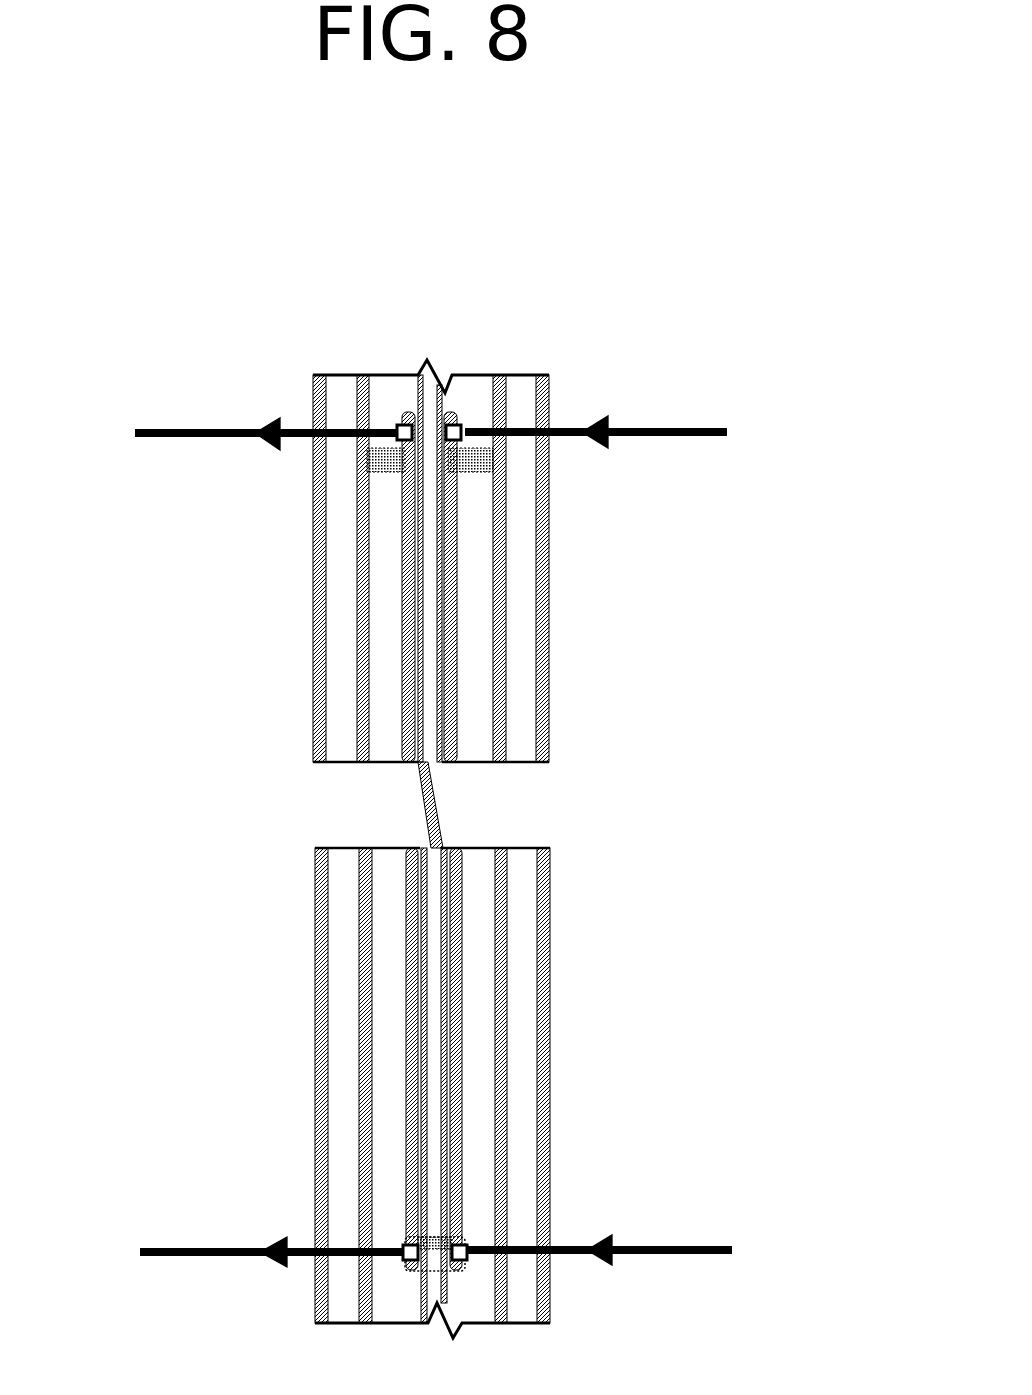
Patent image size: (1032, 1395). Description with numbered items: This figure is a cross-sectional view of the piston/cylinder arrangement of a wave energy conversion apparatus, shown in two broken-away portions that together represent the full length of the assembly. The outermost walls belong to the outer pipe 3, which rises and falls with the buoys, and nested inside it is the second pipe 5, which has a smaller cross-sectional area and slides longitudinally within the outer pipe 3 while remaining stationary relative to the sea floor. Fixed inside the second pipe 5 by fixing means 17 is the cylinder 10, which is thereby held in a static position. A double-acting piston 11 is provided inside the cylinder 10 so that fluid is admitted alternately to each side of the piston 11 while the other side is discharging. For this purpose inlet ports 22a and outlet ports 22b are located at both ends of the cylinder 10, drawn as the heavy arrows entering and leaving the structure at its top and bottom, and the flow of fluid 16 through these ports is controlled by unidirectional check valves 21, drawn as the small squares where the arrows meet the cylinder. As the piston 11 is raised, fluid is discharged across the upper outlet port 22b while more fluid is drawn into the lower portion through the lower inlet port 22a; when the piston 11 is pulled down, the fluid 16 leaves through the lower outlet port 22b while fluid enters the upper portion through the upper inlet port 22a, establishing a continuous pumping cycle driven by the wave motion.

The outer pipe 3 is at (548, 563).
The second pipe 5 is at (500, 638).
The cylinder 10 is at (405, 517).
The double-acting piston 11 is at (458, 685).
The fluid 16 is at (415, 676).
The fixing means 17 is at (362, 480).
The unidirectional check valves 21 is at (463, 433).
The inlet ports 22a is at (692, 427).
The outlet ports 22b is at (180, 438).